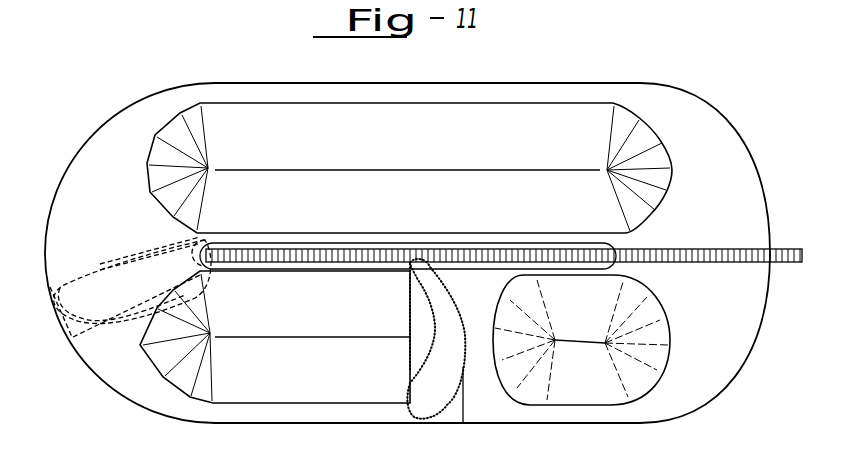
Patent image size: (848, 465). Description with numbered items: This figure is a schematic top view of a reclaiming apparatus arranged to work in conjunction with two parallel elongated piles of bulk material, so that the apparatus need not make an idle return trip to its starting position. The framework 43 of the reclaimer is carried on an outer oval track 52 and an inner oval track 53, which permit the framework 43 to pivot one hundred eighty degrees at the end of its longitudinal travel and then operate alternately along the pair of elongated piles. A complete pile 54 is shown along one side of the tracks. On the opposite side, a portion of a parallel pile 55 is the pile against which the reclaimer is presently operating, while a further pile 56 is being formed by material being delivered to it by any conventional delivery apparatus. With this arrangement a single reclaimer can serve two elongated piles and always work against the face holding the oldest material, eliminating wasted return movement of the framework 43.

The outer oval track 52 is at (407, 272).
The complete pile 54 is at (394, 207).
The portion of a parallel pile 55 is at (334, 327).
The pile being formed 56 is at (585, 319).
The inner oval track 53 is at (495, 268).
The framework 43 is at (435, 332).